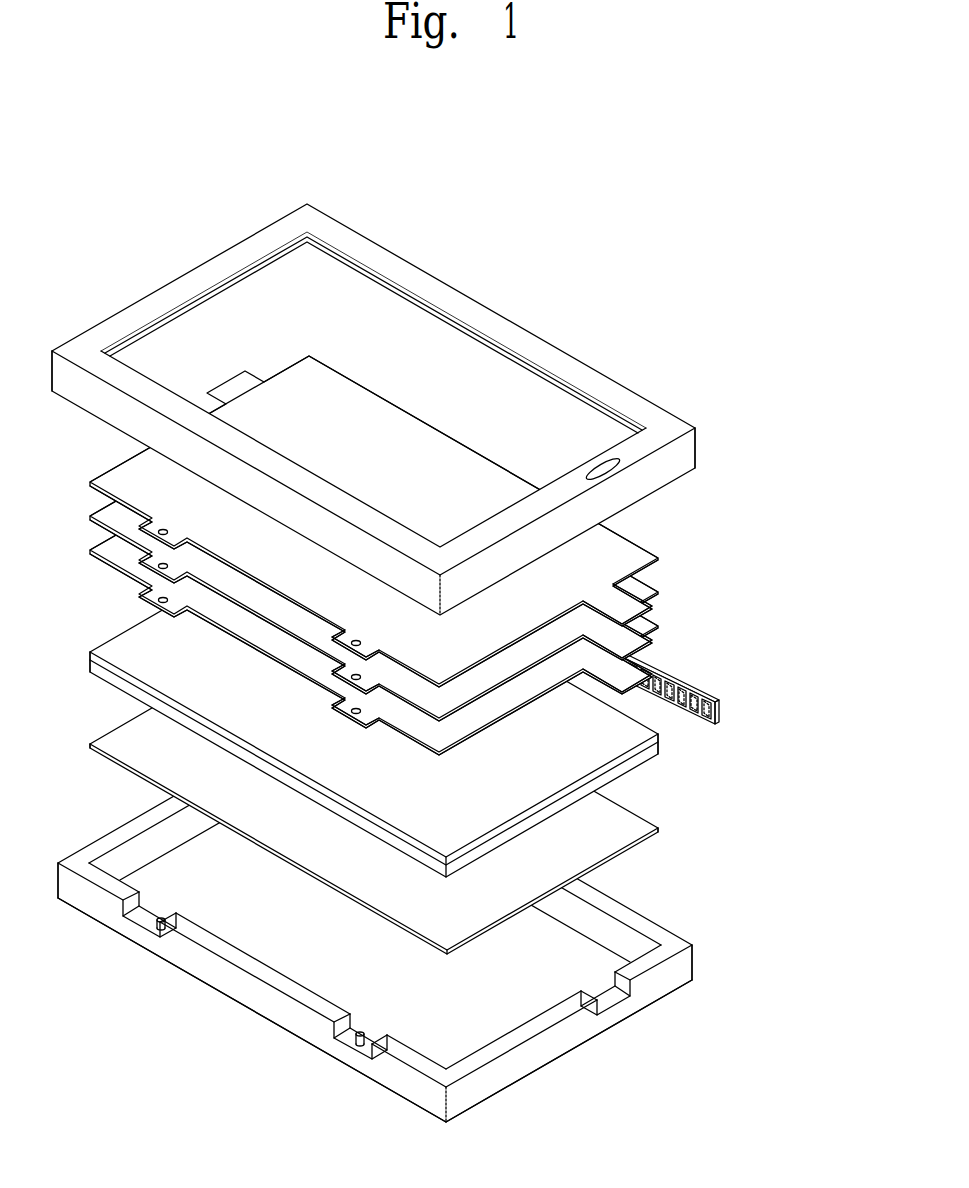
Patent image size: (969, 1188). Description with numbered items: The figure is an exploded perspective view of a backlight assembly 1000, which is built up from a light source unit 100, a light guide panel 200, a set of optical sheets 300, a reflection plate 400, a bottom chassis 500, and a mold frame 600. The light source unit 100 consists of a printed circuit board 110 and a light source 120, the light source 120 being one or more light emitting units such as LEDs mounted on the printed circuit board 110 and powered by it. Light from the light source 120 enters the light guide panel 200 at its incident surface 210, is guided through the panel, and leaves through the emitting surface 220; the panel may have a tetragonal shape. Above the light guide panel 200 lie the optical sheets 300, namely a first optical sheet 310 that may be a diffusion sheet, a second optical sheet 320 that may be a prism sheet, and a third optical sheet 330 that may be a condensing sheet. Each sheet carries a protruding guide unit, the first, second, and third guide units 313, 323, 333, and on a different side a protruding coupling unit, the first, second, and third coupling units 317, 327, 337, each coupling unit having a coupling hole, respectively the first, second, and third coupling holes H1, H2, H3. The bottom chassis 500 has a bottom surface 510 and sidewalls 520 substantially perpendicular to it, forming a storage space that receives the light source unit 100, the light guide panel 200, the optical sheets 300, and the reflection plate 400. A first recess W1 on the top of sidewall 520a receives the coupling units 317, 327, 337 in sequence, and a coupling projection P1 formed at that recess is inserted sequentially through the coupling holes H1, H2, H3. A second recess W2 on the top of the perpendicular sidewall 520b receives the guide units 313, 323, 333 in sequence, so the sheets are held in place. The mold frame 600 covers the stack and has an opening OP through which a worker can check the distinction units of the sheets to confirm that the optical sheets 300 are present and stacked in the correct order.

The backlight assembly 1000 is at (446, 638).
The mold frame 600 is at (373, 409).
The opening OP is at (590, 472).
The optical sheets 300 is at (447, 577).
The first optical sheet 310 is at (421, 577).
The second optical sheet 320 is at (421, 581).
The third optical sheet 330 is at (421, 589).
The first coupling unit 317 is at (311, 633).
The second coupling unit 327 is at (322, 656).
The third coupling unit 337 is at (342, 678).
The first coupling hole H1 is at (355, 613).
The second coupling hole H2 is at (362, 670).
The third coupling hole H3 is at (365, 705).
The first guide unit 313 is at (592, 603).
The second guide unit 323 is at (597, 636).
The third guide unit 333 is at (592, 668).
The light source unit 100 is at (713, 676).
The printed circuit board 110 is at (650, 668).
The light source 120 is at (672, 694).
The light guide panel 200 is at (441, 703).
The incident surface 210 is at (662, 745).
The emitting surface 220 is at (588, 757).
The reflection plate 400 is at (628, 830).
The bottom chassis 500 is at (449, 921).
The bottom surface 510 is at (583, 947).
The sidewalls 520 is at (422, 921).
The sidewall 520a is at (235, 990).
The sidewall 520b is at (583, 1030).
The first recess W1 is at (370, 1020).
The second recess W2 is at (588, 982).
The coupling projection P1 is at (345, 1031).